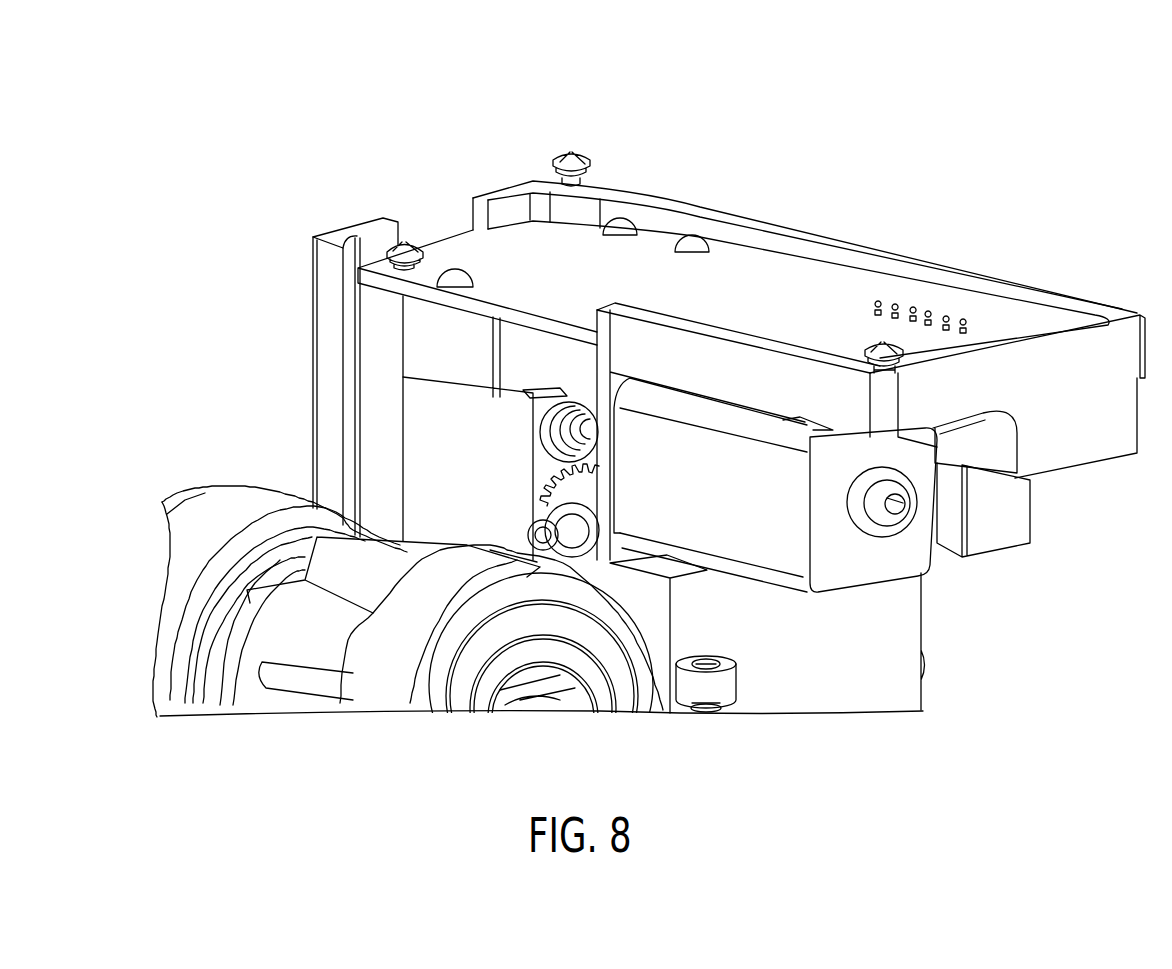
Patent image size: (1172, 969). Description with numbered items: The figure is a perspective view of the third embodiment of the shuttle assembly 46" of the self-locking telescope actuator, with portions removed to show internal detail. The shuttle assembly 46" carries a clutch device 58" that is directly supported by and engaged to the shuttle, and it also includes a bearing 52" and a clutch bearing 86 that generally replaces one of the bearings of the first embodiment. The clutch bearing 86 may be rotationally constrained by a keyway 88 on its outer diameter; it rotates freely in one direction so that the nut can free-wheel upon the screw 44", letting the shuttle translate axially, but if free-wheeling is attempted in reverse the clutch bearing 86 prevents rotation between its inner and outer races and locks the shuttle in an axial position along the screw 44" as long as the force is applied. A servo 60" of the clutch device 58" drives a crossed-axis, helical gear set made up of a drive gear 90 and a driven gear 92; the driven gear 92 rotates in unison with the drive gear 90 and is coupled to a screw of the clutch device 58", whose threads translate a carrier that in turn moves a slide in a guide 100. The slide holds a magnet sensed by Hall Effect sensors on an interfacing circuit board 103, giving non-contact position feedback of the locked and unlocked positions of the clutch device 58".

The shuttle assembly 46 is at (1048, 130).
The clutch device 58 is at (1075, 285).
The circuit board 103 is at (768, 284).
The guide 100 is at (427, 350).
The drive gear 90 is at (548, 444).
The driven gear 92 is at (548, 484).
The keyway 88 is at (487, 553).
The servo 60 is at (873, 583).
The clutch bearing 86 is at (387, 683).
The bearing 52 is at (290, 492).
The screw 44 is at (208, 697).